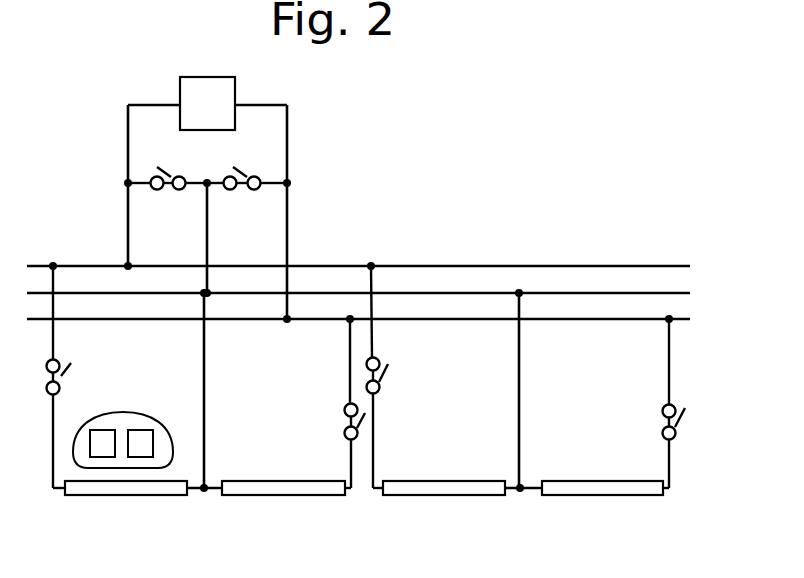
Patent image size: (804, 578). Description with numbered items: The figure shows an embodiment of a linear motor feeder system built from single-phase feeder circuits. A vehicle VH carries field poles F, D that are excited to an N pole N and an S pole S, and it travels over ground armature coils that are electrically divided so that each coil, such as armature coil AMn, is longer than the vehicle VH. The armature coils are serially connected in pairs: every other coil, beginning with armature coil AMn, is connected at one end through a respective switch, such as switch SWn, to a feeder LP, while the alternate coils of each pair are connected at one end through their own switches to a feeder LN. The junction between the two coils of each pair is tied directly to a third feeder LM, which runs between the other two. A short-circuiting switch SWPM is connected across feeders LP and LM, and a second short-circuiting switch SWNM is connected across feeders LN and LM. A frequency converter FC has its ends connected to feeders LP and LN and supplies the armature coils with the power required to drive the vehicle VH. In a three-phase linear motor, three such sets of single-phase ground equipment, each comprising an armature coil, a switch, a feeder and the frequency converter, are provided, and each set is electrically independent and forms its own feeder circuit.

The frequency converter FC is at (207, 103).
The short-circuiting switch SWPM is at (166, 167).
The short-circuiting switch SWNM is at (247, 170).
The feeder LP is at (488, 266).
The feeder LM is at (554, 293).
The feeder LN is at (610, 319).
The switch SWn is at (72, 368).
The vehicle VH is at (167, 423).
The field pole F is at (107, 430).
The field pole D is at (143, 430).
The S pole S is at (102, 444).
The N pole N is at (140, 444).
The armature coil AMn is at (137, 504).